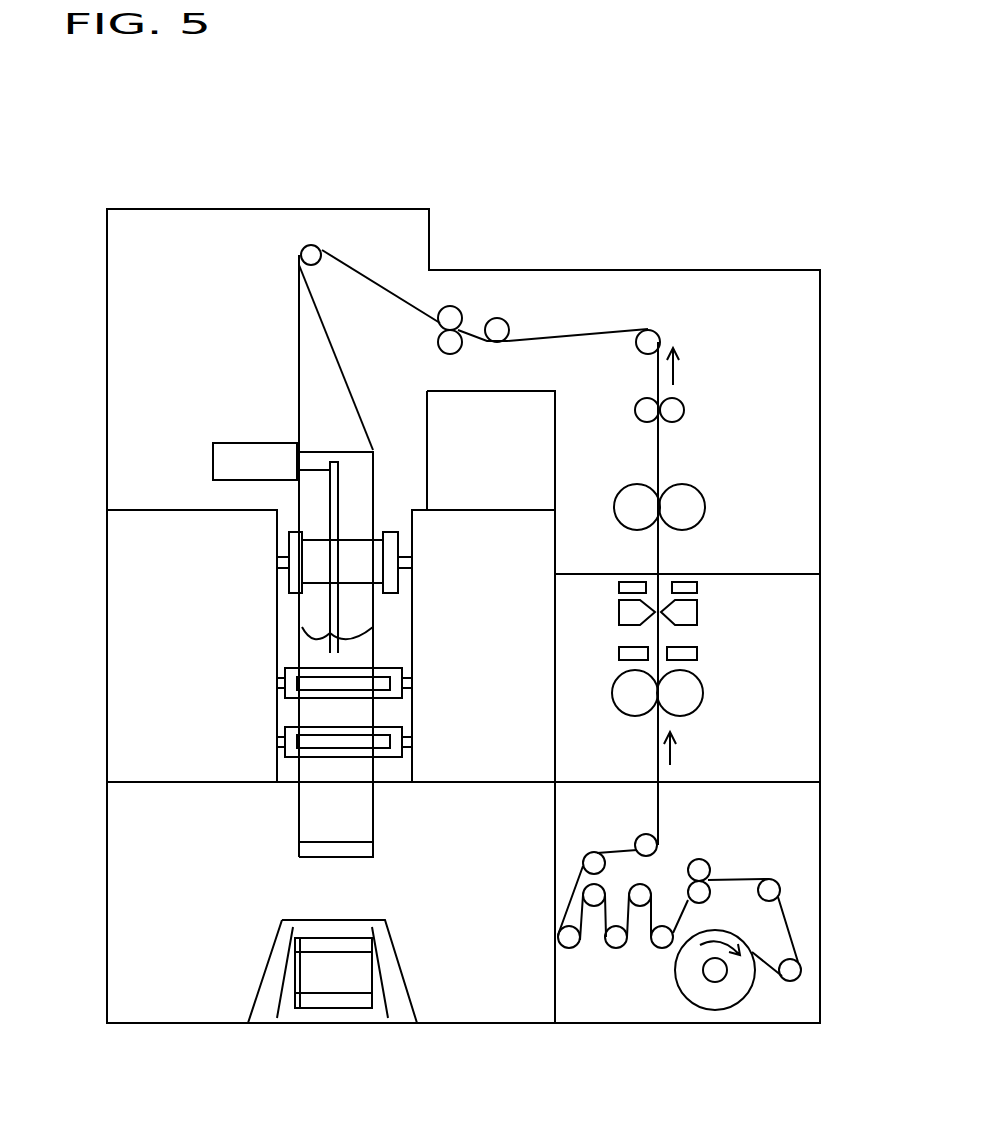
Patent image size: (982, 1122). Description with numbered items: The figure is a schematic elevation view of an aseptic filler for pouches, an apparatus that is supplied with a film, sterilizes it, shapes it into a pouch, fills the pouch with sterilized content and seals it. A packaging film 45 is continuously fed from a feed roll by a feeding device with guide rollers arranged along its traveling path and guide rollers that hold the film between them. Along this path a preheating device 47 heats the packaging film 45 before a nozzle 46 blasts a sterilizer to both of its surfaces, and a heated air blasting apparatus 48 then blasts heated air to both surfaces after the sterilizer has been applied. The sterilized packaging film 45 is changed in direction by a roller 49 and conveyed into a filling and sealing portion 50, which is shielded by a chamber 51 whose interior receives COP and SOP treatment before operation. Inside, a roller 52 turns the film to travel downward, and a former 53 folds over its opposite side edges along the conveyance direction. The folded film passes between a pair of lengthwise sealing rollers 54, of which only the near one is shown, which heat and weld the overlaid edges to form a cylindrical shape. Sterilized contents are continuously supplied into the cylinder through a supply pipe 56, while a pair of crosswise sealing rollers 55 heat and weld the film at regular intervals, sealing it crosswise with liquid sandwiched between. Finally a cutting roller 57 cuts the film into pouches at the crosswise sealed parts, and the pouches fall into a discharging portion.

The packaging film 45 is at (337, 402).
The nozzle 46 is at (697, 620).
The preheating device 47 is at (697, 653).
The heated air blasting apparatus 48 is at (697, 587).
The roller 49 is at (650, 329).
The filling and sealing portion 50 is at (127, 426).
The chamber 51 is at (537, 270).
The roller 52 is at (312, 251).
The former 53 is at (276, 387).
The lengthwise sealing rollers 54 is at (318, 570).
The crosswise sealing rollers 55 is at (287, 668).
The supply pipe 56 is at (313, 467).
The cutting roller 57 is at (287, 727).